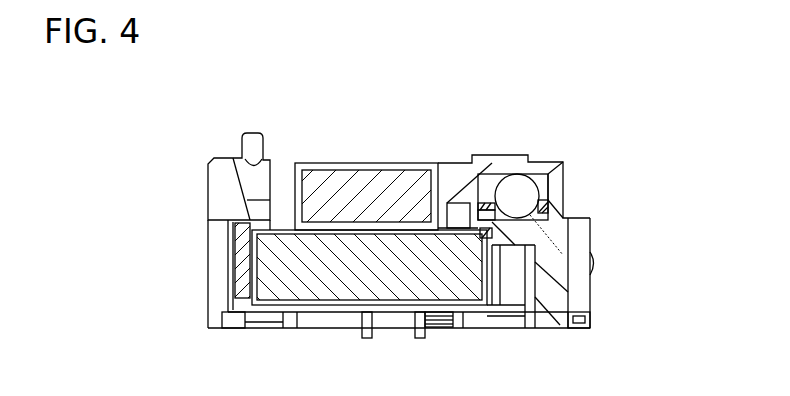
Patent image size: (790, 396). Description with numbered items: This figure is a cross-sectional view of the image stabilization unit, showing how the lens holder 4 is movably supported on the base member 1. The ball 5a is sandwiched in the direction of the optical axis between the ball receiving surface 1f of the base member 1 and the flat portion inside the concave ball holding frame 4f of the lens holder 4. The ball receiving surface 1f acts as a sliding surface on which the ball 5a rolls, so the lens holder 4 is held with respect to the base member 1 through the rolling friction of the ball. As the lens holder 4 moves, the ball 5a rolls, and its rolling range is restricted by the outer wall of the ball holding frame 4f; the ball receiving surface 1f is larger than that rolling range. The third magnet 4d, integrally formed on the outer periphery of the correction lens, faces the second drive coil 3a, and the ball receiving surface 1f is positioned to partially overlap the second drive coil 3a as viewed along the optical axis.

The base member 1 is at (217, 190).
The ball receiving surface 1f is at (553, 203).
The second drive coil 3a is at (318, 295).
The lens holder 4 is at (457, 175).
The third magnet 4d is at (362, 177).
The ball holding frame 4f is at (564, 182).
The ball 5a is at (522, 185).